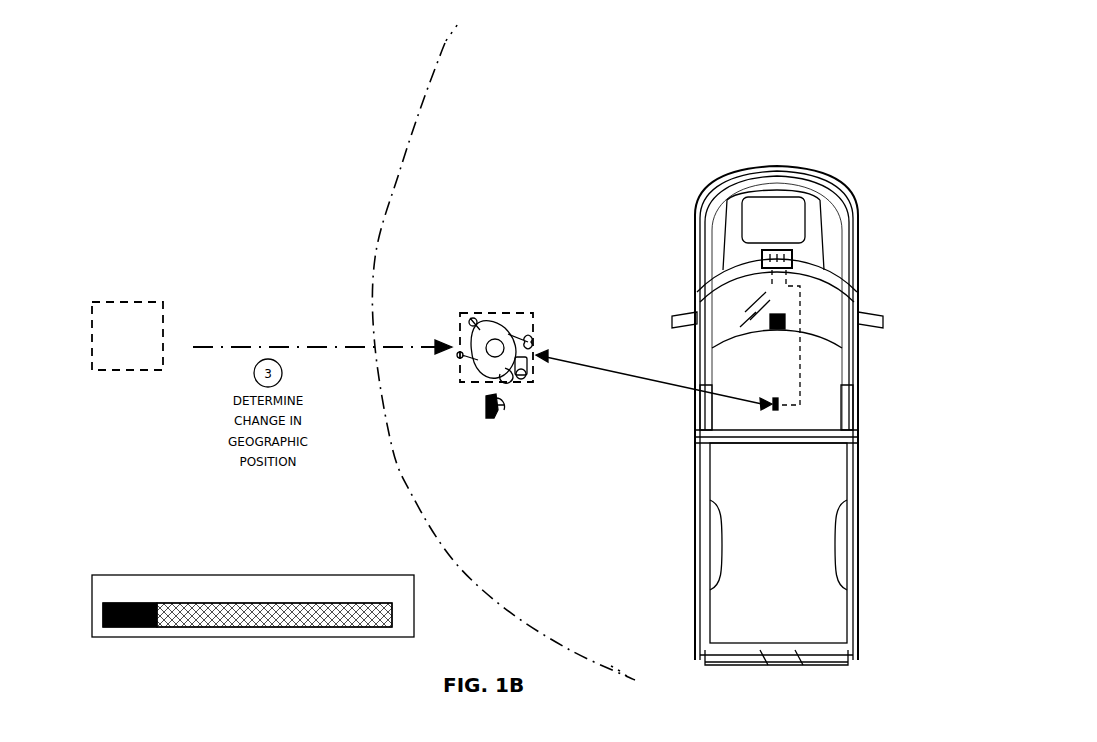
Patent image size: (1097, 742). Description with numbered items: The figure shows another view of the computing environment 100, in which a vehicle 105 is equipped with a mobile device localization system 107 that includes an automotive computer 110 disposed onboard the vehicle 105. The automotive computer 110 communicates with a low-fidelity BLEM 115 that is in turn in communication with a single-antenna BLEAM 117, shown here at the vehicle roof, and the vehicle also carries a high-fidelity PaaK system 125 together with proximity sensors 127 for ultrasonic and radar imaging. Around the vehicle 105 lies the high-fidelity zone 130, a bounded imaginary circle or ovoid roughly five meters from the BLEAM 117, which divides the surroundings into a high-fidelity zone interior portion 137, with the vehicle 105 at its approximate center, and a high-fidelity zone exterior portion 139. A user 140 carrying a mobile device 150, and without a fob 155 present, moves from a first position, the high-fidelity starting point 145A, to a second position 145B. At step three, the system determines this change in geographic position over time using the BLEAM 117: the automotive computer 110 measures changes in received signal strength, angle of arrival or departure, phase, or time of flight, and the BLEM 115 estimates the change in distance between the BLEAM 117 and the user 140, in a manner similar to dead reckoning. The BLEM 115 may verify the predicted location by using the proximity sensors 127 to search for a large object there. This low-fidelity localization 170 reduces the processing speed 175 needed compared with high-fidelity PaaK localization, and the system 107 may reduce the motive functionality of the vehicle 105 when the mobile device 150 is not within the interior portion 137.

The computing environment 100 is at (930, 75).
The vehicle 105 is at (765, 168).
The mobile device localization system 107 is at (883, 135).
The automotive computer 110 is at (793, 258).
The low-fidelity BLEM 115 is at (795, 258).
The BLEAM 117 is at (772, 403).
The PaaK system 125 is at (786, 318).
The proximity sensors 127 is at (853, 301).
The high-fidelity zone 130 is at (433, 82).
The high-fidelity zone interior portion 137 is at (754, 112).
The high-fidelity zone exterior portion 139 is at (236, 125).
The user 140 is at (476, 342).
The high-fidelity starting point 145A is at (112, 302).
The second position 145B is at (526, 313).
The mobile device 150 is at (528, 372).
The fob 155 is at (500, 420).
The low-fidelity localization 170 is at (163, 575).
The processing speed 175 is at (130, 630).